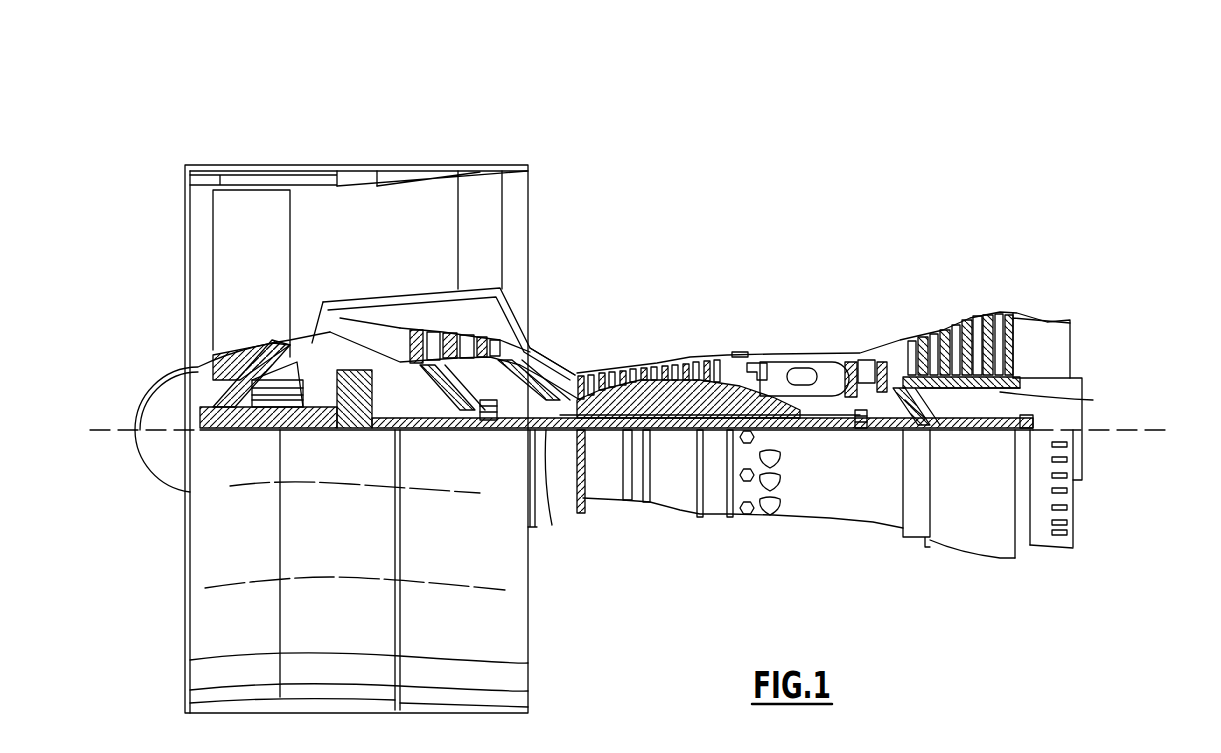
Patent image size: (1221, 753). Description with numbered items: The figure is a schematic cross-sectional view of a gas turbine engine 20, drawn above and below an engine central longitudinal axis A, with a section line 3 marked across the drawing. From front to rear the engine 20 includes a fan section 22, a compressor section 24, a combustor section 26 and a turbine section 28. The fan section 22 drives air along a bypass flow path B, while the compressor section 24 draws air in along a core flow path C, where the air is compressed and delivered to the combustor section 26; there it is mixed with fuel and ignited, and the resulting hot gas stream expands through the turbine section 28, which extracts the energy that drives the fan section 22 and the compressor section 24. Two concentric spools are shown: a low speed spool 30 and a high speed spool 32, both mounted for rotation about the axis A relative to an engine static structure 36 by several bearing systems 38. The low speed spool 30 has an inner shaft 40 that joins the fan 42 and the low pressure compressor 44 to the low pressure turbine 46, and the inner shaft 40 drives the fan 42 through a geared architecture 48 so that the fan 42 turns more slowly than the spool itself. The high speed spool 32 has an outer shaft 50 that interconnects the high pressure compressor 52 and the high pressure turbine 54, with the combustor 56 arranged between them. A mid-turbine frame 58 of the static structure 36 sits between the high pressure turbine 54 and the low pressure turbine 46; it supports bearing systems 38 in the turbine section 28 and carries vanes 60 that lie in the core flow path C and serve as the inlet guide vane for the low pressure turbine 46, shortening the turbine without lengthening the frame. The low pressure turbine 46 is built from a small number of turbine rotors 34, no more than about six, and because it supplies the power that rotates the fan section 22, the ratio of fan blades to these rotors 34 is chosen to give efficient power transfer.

The gas turbine engine 20 is at (795, 205).
The fan section 22 is at (290, 155).
The compressor section 24 is at (580, 342).
The combustor section 26 is at (786, 328).
The turbine section 28 is at (925, 298).
The low speed spool 30 is at (673, 435).
The high speed spool 32 is at (718, 362).
The turbine rotors 34 is at (1000, 392).
The engine static structure 36 is at (700, 500).
The bearing systems 38 is at (290, 432).
The inner shaft 40 is at (553, 526).
The fan 42 is at (236, 284).
The low pressure compressor section 44 is at (485, 307).
The low pressure turbine section 46 is at (965, 330).
The geared architecture 48 is at (362, 428).
The outer shaft 50 is at (793, 428).
The high pressure compressor section 52 is at (663, 360).
The high pressure turbine section 54 is at (845, 357).
The combustor 56 is at (785, 375).
The mid-turbine frame 58 is at (888, 338).
The vanes 60 is at (915, 405).
The engine central longitudinal axis A is at (1163, 430).
The bypass flow path B is at (405, 237).
The core flow path C is at (352, 333).
The section line 3- 3 is at (830, 237).